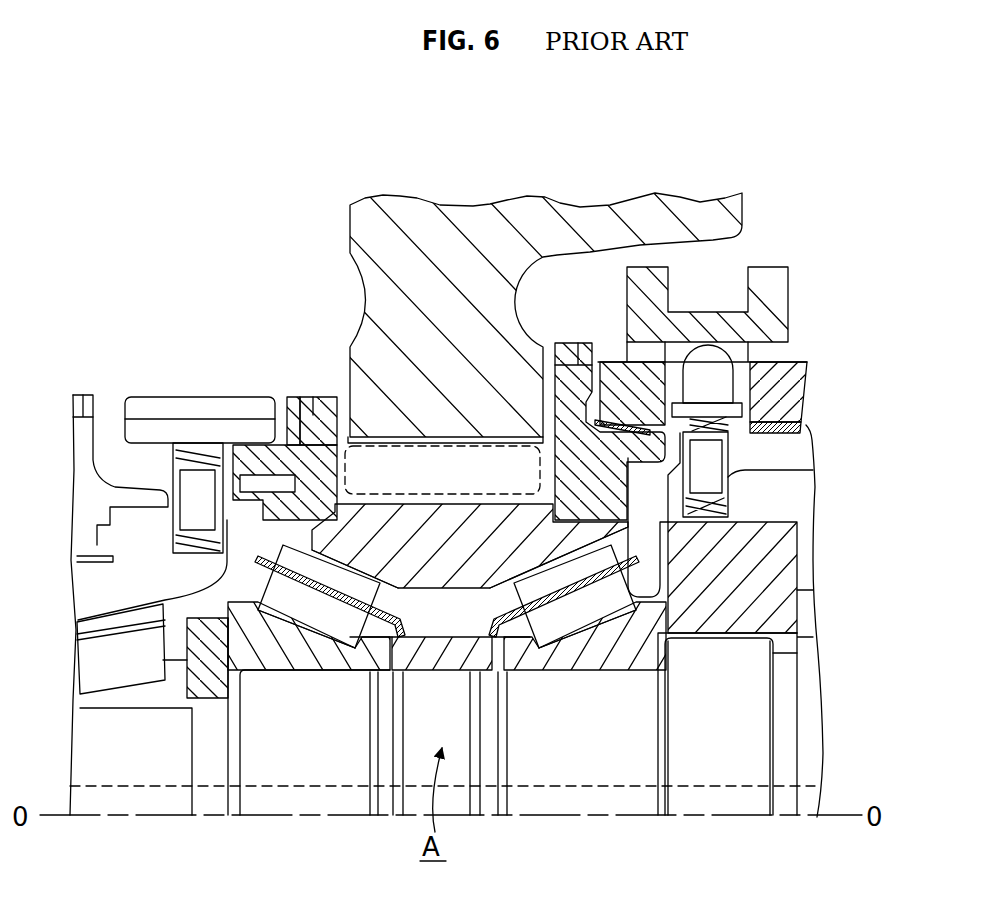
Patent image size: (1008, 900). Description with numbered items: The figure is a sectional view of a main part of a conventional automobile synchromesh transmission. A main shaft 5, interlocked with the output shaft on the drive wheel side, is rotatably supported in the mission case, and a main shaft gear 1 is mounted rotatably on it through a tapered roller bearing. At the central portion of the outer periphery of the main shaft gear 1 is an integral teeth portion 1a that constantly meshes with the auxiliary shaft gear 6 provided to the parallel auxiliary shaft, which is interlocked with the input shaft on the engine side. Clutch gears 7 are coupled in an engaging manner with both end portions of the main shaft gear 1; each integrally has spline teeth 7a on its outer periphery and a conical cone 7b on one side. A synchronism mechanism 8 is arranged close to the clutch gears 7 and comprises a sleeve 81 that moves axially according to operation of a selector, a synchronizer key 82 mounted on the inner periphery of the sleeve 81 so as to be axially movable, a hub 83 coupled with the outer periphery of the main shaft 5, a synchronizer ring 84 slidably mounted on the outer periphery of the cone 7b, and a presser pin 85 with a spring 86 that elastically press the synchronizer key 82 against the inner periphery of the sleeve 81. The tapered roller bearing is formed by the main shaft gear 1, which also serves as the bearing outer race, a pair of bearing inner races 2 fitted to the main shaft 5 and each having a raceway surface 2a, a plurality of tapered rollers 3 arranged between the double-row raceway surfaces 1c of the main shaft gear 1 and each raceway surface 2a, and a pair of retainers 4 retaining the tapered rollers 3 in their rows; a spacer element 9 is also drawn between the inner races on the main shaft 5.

The main shaft gear 1 is at (428, 573).
The teeth portion 1a is at (437, 461).
The double-row raceway surfaces 1c is at (376, 530).
The bearing inner races 2 is at (270, 666).
The raceway surface 2a is at (338, 661).
The tapered rollers 3 is at (295, 640).
The retainers 4 is at (272, 575).
The main shaft 5 is at (746, 683).
The auxiliary shaft gear 6 is at (356, 227).
The clutch gears 7 is at (553, 394).
The spline teeth 7a is at (563, 352).
The cone 7b is at (642, 462).
The synchronism mechanism 8 is at (802, 346).
The sleeve 81 is at (780, 288).
The synchronizer key 82 is at (802, 381).
The hub 83 is at (786, 553).
The synchronizer ring 84 is at (605, 360).
The presser pin 85 is at (727, 399).
The spring 86 is at (813, 470).
The inner ring spacer 9 is at (437, 673).